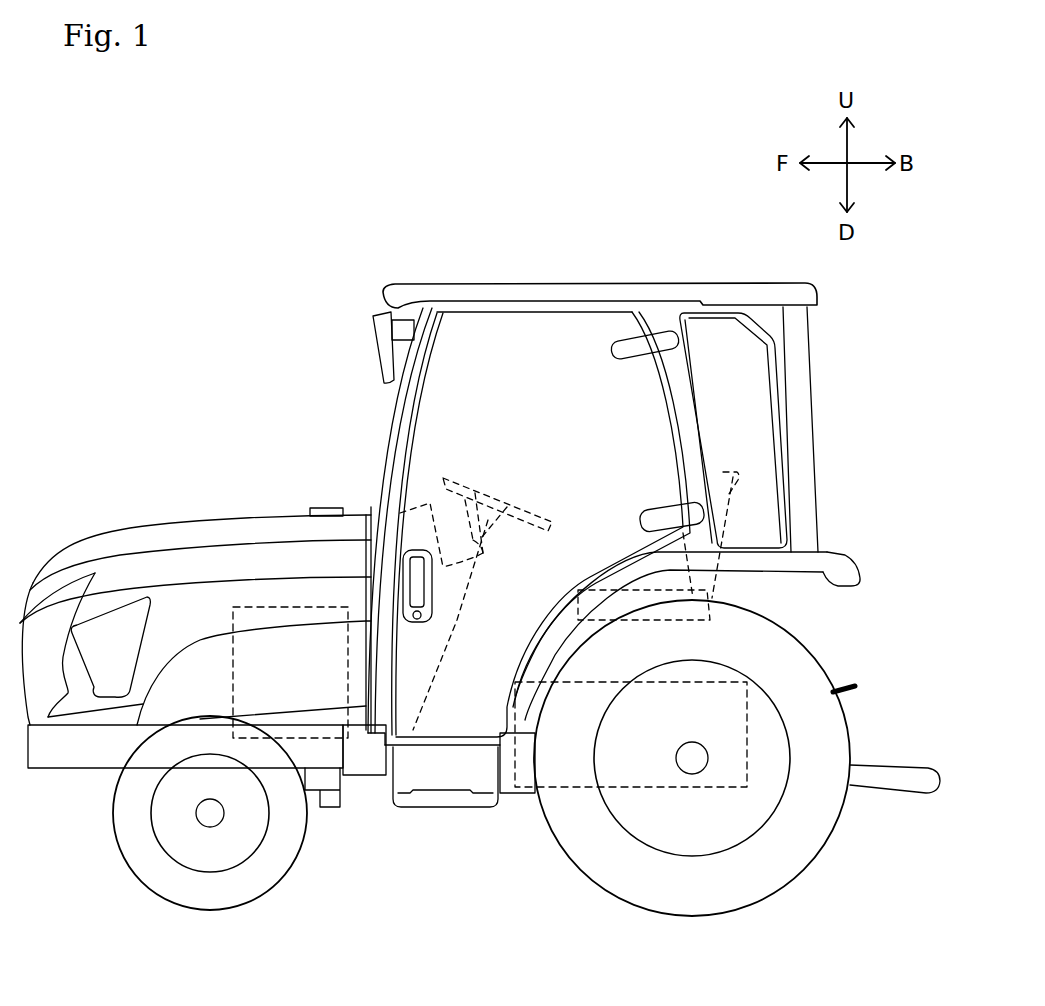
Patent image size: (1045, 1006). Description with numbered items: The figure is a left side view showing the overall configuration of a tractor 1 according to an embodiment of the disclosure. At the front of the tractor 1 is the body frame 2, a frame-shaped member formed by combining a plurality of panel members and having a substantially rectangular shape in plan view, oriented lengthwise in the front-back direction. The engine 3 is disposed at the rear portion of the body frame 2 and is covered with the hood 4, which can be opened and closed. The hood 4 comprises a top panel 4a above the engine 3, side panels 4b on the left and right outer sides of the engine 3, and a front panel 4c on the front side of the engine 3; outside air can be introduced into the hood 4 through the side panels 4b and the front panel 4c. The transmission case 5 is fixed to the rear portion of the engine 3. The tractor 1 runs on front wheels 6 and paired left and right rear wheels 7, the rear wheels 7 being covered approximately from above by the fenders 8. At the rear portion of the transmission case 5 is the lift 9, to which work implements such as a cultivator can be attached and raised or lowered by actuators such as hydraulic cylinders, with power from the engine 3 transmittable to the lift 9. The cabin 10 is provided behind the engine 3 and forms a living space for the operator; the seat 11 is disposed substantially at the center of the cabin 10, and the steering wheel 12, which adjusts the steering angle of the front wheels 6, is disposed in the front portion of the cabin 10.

The tractor 1 is at (480, 554).
The body frame 2 is at (82, 755).
The engine 3 is at (305, 615).
The hood 4 is at (113, 530).
The top panel 4a is at (145, 530).
The side panels 4b is at (192, 560).
The front panel 4c is at (42, 740).
The transmission case 5 is at (572, 790).
The front wheels 6 is at (293, 827).
The rear wheels 7 is at (825, 823).
The fenders 8 is at (840, 572).
The lift 9 is at (848, 662).
The cabin 10 is at (630, 268).
The seat 11 is at (722, 500).
The steering wheel 12 is at (488, 490).